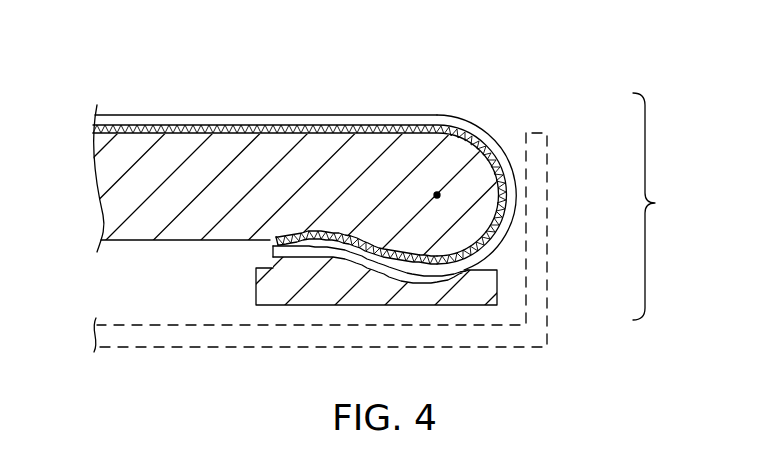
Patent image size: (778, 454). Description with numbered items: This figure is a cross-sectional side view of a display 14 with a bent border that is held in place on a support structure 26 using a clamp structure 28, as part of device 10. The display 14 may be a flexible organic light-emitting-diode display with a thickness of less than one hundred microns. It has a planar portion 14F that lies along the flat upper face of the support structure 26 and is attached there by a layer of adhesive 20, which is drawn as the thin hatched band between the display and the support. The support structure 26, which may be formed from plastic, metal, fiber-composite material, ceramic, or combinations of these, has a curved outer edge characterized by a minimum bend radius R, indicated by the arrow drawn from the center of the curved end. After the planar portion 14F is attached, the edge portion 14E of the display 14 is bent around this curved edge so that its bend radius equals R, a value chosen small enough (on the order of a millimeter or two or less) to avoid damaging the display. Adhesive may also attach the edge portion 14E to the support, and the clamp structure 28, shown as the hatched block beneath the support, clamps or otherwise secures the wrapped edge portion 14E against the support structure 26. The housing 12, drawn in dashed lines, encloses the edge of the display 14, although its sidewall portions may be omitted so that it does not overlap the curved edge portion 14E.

The device 10 is at (662, 206).
The housing 12 is at (537, 165).
The display 14 is at (461, 75).
The edge portion 14E is at (497, 242).
The planar portion 14F is at (220, 116).
The adhesive 20 is at (463, 130).
The support structure 26 is at (362, 150).
The clamp structure 28 is at (345, 290).
The bend radius R is at (496, 180).